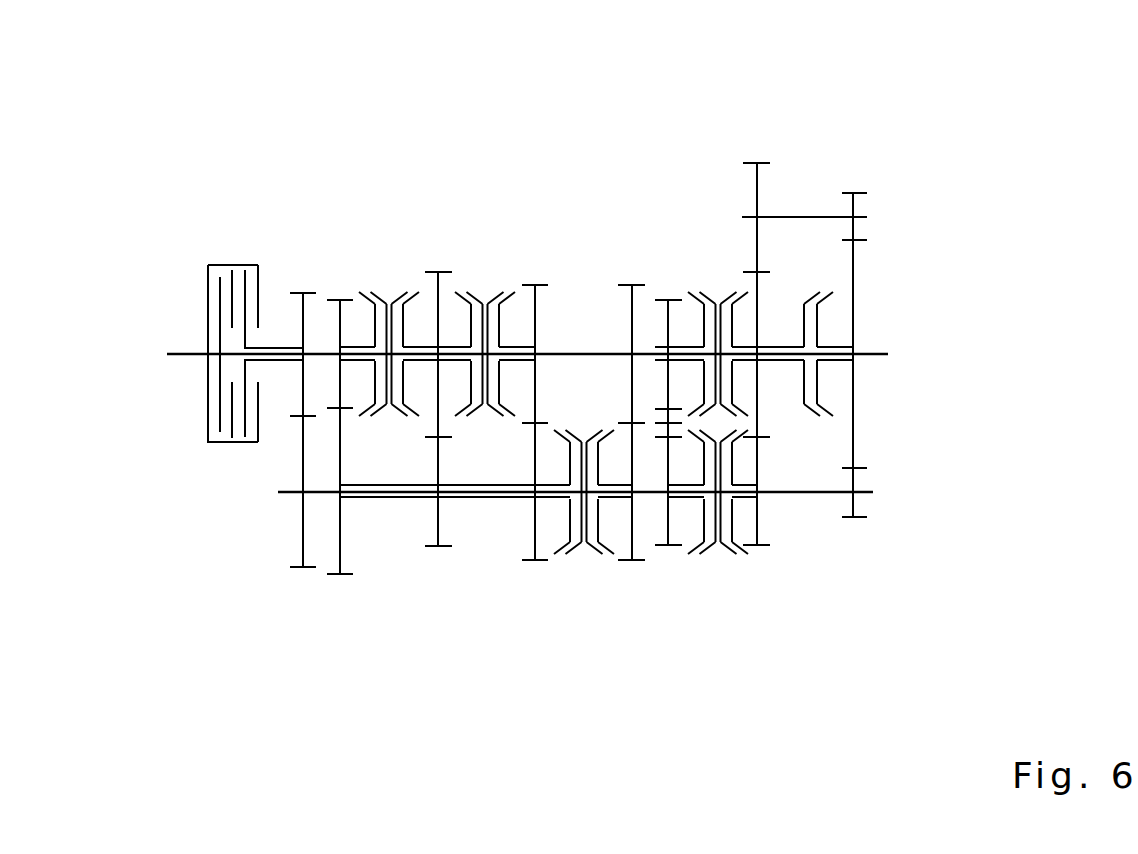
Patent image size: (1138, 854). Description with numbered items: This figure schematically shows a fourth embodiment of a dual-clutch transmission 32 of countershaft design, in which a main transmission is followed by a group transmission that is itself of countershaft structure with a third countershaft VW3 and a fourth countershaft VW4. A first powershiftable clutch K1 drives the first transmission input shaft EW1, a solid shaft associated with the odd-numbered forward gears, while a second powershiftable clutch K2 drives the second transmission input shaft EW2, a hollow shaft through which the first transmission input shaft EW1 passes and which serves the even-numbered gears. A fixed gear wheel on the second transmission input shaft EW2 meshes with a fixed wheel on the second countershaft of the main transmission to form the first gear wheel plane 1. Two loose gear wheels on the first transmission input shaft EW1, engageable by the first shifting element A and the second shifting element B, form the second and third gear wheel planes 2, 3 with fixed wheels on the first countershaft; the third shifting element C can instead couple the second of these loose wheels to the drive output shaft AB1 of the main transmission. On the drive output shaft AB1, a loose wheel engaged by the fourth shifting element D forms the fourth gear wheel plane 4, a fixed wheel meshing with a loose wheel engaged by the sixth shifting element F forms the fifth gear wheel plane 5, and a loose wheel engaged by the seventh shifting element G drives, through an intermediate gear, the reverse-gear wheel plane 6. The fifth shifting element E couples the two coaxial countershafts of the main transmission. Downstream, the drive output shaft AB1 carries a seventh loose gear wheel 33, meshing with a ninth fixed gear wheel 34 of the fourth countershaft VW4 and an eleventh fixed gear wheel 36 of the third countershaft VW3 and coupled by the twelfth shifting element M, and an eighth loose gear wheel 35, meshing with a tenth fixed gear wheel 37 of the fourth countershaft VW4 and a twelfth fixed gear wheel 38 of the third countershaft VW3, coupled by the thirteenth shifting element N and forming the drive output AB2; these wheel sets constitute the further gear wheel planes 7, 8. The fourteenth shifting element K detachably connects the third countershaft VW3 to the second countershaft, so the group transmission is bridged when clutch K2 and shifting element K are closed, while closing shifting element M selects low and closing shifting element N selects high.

The first powershiftable clutch K1 is at (213, 258).
The second powershiftable clutch K2 is at (238, 258).
The first transmission input shaft EW1 is at (315, 348).
The second transmission input shaft EW2 is at (278, 362).
The drive output shaft AB1 is at (580, 350).
The drive output AB2 is at (875, 352).
The third countershaft VW3 is at (830, 493).
The fourth countershaft VW4 is at (810, 217).
The first gear wheel plane 1 is at (302, 280).
The second gear wheel plane 2 is at (340, 287).
The third gear wheel plane 3 is at (438, 259).
The fourth gear wheel plane 4 is at (535, 272).
The fifth gear wheel plane 5 is at (632, 272).
The reverse-gear wheel plane 6 is at (668, 287).
The seventh gear plane 7 is at (757, 150).
The eighth gear plane 8 is at (853, 180).
The transmission 32 is at (260, 538).
The seventh engageable loose gear wheel 33 is at (757, 405).
The ninth fixed gear wheel 34 is at (755, 185).
The eighth loose gear wheel 35 is at (857, 265).
The eleventh fixed gear wheel 36 is at (757, 523).
The tenth fixed gear wheel 37 is at (857, 500).
The twelfth fixed gear wheel 38 is at (857, 203).
The first interlocking shifting element A is at (388, 337).
The second interlocking shifting element B is at (420, 309).
The third interlocking shifting element C is at (485, 337).
The fourth interlocking shifting element D is at (517, 309).
The fifth interlocking shifting element E is at (584, 508).
The sixth interlocking shifting element F is at (615, 535).
The seventh interlocking shifting element G is at (718, 337).
The fourteenth interlocking shifting element K is at (718, 508).
The twelfth interlocking shifting element M is at (765, 309).
The thirteenth interlocking shifting element N is at (828, 337).